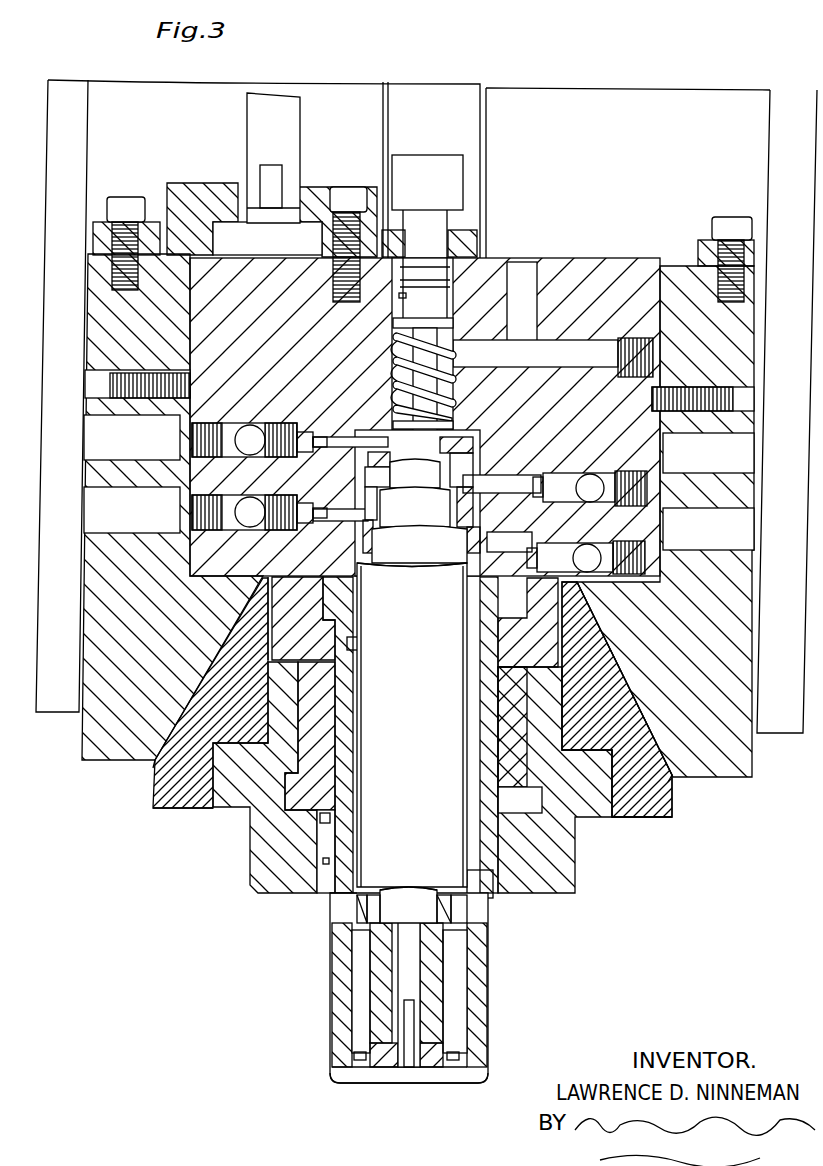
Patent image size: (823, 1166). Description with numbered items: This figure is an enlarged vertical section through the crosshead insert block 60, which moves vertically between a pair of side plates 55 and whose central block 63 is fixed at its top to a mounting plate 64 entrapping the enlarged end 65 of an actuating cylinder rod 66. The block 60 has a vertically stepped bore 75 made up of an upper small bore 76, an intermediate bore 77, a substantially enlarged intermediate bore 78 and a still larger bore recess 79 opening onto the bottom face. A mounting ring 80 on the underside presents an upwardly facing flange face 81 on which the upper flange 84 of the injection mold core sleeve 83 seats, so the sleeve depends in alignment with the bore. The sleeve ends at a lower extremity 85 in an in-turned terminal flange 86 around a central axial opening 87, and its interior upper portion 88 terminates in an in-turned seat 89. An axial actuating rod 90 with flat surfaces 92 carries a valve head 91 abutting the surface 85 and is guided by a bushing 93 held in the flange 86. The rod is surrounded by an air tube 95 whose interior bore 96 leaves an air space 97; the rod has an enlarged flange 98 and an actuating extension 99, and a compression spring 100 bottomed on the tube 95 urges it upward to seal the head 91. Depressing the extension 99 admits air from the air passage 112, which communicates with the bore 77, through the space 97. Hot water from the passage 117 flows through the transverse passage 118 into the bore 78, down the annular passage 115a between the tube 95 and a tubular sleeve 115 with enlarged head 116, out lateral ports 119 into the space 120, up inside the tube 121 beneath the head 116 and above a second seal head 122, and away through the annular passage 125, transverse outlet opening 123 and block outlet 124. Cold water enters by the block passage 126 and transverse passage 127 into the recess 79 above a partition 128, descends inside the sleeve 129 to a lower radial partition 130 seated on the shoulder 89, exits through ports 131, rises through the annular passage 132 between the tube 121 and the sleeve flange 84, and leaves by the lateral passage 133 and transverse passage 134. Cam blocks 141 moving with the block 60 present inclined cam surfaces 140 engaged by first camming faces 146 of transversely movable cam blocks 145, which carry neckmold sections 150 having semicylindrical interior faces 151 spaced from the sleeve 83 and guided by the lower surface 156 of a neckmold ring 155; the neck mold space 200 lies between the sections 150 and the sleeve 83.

The side plates 55 is at (44, 712).
The crosshead insert block 60 is at (620, 264).
The central block 63 is at (235, 344).
The mounting plate 64 is at (182, 190).
The enlarged end 65 is at (268, 249).
The actuating cylinder rod 66 is at (296, 153).
The vertically stepped bores 75 is at (466, 402).
The upper bore 76 is at (399, 297).
The intermediate bore 77 is at (397, 379).
The enlarged intermediate bore 78 is at (366, 477).
The bore recess 79 is at (301, 618).
The mounting ring 80 is at (553, 620).
The flange face 81 is at (503, 620).
The injection mold core sleeve 83 is at (492, 789).
The upper radially enlarged flange 84 is at (348, 608).
The lower extremity 85 is at (337, 1067).
The in-turned terminal flange 86 is at (363, 1067).
The central axial opening 87 is at (380, 1067).
The upper portion 88 is at (473, 1032).
The in-turned seat 89 is at (463, 937).
The axial actuating rod 90 is at (411, 923).
The valve head 91 is at (480, 1079).
The flat surfaces 92 is at (410, 1067).
The bushing 93 is at (432, 1067).
The air tube 95 is at (426, 487).
The interior bore 96 is at (408, 430).
The air space 97 is at (462, 462).
The radially enlarged flange 98 is at (400, 328).
The upper actuating extension 99 is at (430, 244).
The compression spring 100 is at (445, 378).
The air passage 112 is at (526, 285).
The tubular sleeve 115 is at (437, 520).
The annular passage 115a is at (375, 1000).
The enlarged head 116 is at (458, 448).
The hot water passage 117 is at (252, 430).
The transverse passage 118 is at (326, 440).
The lateral outlet ports 119 is at (368, 1033).
The space 120 is at (460, 987).
The tube 121 is at (439, 557).
The second tube seal head 122 is at (478, 508).
The transverse outlet opening 123 is at (504, 481).
The block outlet 124 is at (590, 482).
The annular passage 125 is at (420, 888).
The block passage 126 is at (252, 505).
The transverse passage 127 is at (327, 514).
The partition 128 is at (371, 543).
The sleeve 129 is at (357, 645).
The lower radial partition 130 is at (357, 925).
The ports 131 is at (357, 903).
The annular passage 132 is at (437, 698).
The lateral passage 133 is at (531, 580).
The transverse passage 134 is at (588, 552).
The cam surfaces 140 is at (210, 690).
The cam blocks 141 is at (177, 624).
The cam blocks 145 is at (190, 810).
The first camming faces 146 is at (158, 760).
The neckmold sections 150 is at (250, 866).
The semicylindrical interior faces 151 is at (322, 863).
The neckmold ring 155 is at (287, 787).
The lower surface 156 is at (528, 813).
The neck mold space 200 is at (330, 897).